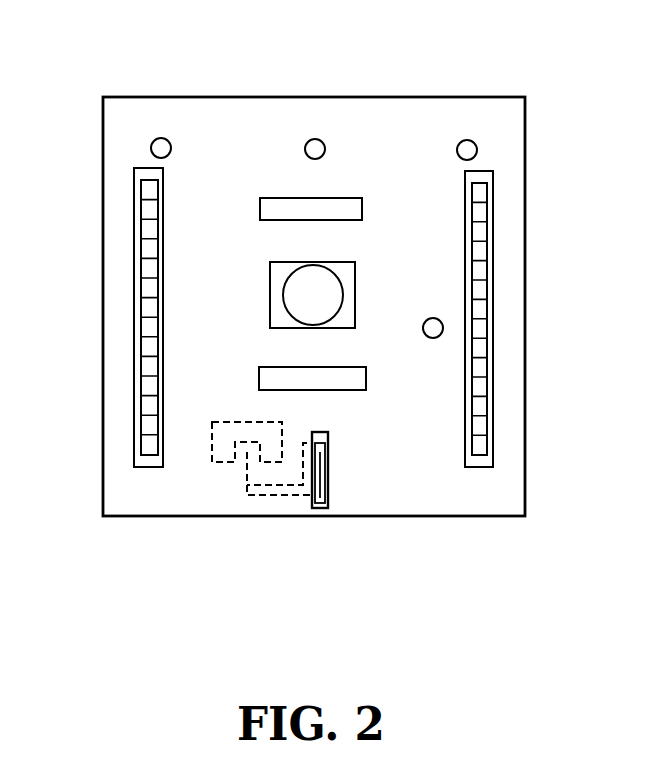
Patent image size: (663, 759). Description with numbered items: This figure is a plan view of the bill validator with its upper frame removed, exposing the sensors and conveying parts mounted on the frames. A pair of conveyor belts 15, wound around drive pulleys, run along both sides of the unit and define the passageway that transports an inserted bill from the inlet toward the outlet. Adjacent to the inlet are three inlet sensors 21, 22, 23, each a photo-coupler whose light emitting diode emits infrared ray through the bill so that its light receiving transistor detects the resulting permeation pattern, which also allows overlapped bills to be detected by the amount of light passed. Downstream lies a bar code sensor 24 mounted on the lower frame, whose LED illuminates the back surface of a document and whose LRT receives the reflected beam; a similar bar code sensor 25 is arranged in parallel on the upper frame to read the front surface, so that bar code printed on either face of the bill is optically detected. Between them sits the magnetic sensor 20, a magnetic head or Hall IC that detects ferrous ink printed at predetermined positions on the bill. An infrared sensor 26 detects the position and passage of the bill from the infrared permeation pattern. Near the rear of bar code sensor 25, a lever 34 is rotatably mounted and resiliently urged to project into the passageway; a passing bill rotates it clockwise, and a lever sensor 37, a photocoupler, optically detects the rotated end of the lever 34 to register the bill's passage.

The conveyor belts 15 is at (138, 318).
The magnetic sensor 20 is at (320, 308).
The inlet sensor 21 is at (160, 137).
The inlet sensor 22 is at (315, 138).
The inlet sensor 23 is at (467, 139).
The bar code sensor 24 is at (342, 197).
The bar code sensor 25 is at (360, 382).
The infrared sensor 26 is at (441, 335).
The lever 34 is at (313, 507).
The lever sensor 37 is at (222, 452).